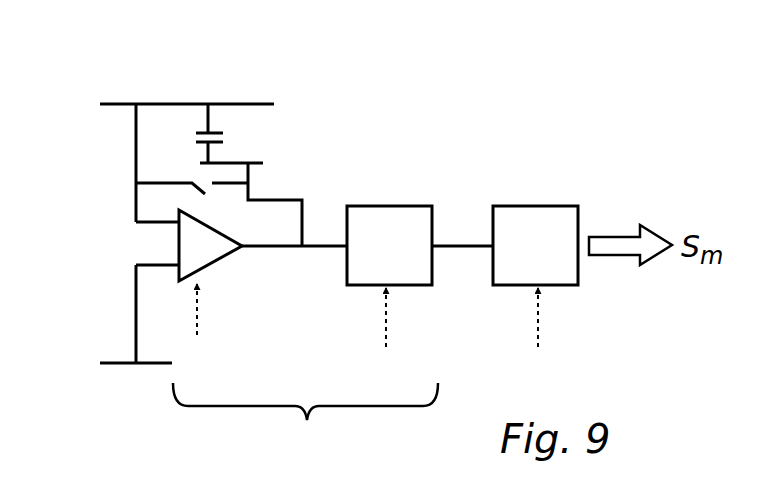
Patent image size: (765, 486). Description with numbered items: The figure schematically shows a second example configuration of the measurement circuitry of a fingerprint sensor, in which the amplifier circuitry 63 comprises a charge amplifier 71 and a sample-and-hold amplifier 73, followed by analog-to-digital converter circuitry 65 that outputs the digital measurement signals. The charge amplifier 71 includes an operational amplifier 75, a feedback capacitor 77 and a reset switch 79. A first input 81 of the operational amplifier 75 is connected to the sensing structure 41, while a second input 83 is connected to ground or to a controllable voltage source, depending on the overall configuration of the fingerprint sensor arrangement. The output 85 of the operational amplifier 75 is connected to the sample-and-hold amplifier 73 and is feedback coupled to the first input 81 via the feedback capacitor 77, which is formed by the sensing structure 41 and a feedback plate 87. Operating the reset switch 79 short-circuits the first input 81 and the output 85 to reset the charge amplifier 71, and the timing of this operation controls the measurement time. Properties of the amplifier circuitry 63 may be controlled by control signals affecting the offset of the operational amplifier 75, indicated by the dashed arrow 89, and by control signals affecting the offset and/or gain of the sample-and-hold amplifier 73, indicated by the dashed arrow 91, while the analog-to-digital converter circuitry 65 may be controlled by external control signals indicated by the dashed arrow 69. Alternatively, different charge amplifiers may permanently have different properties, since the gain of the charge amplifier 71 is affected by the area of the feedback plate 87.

The sensing structure 41 is at (208, 103).
The feedback capacitor 77 is at (239, 128).
The feedback plate 87 is at (257, 162).
The reset switch 79 is at (200, 175).
The first input 81 is at (177, 222).
The second input 83 is at (178, 272).
The operational amplifier 75 is at (209, 218).
The charge amplifier 71 is at (252, 272).
The output 85 is at (244, 245).
The dashed arrow 89 is at (197, 317).
The sample-and-hold amplifier 73 is at (397, 193).
The analog-to-digital converter circuitry 65 is at (535, 205).
The dashed arrow 91 is at (386, 332).
The dashed arrow 69 is at (538, 332).
The amplifier circuitry 63 is at (305, 420).